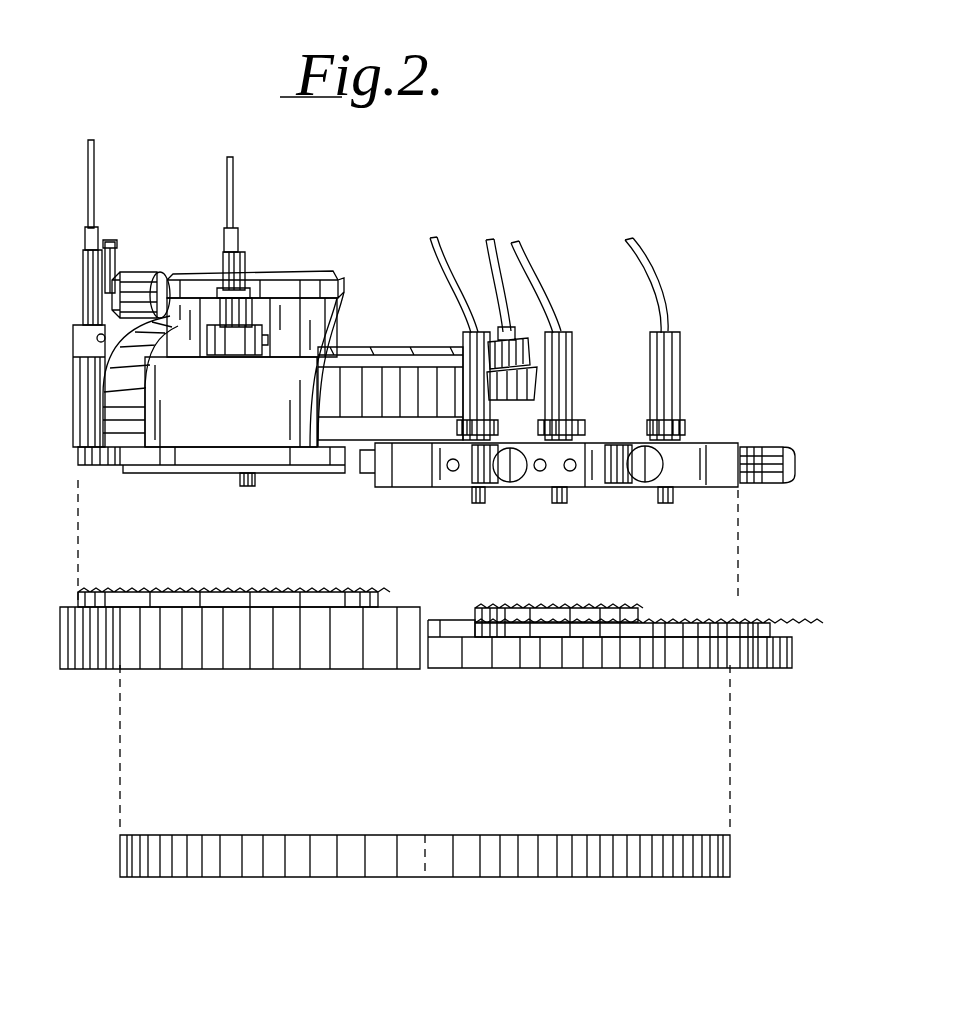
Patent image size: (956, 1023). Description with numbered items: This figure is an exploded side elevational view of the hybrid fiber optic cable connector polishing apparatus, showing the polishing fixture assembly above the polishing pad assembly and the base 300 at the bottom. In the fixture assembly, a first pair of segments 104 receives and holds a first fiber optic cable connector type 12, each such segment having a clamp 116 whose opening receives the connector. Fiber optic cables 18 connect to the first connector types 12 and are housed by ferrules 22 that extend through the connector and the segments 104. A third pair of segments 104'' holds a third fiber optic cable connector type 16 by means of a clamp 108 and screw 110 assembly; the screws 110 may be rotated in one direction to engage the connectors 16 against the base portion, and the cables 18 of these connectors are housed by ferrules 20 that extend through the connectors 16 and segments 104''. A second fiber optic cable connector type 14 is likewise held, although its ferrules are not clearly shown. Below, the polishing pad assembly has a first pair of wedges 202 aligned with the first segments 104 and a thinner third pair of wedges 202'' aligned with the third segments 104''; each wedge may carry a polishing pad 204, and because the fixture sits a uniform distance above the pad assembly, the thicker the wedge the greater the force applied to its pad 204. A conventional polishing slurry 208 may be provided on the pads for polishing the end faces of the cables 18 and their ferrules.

The first fiber optic cable connector type 12 is at (221, 263).
The second fiber optic cable connector type 14 is at (503, 353).
The third fiber optic cable connector type 16 is at (652, 362).
The fiber optic cable 18 is at (227, 170).
The ferrule 20 is at (483, 500).
The ferrule 22 is at (248, 486).
The first pair of segments 104 is at (211, 488).
The third pair of segments 104'' is at (739, 408).
The clamp 108 is at (708, 480).
The screw 110 is at (487, 465).
The clamp 116 is at (282, 282).
The first pair of wedges 202 is at (240, 666).
The third pair of wedges 202'' is at (610, 675).
The polishing pad 204 is at (247, 600).
The polishing slurry 208 is at (145, 592).
The base 300 is at (425, 883).